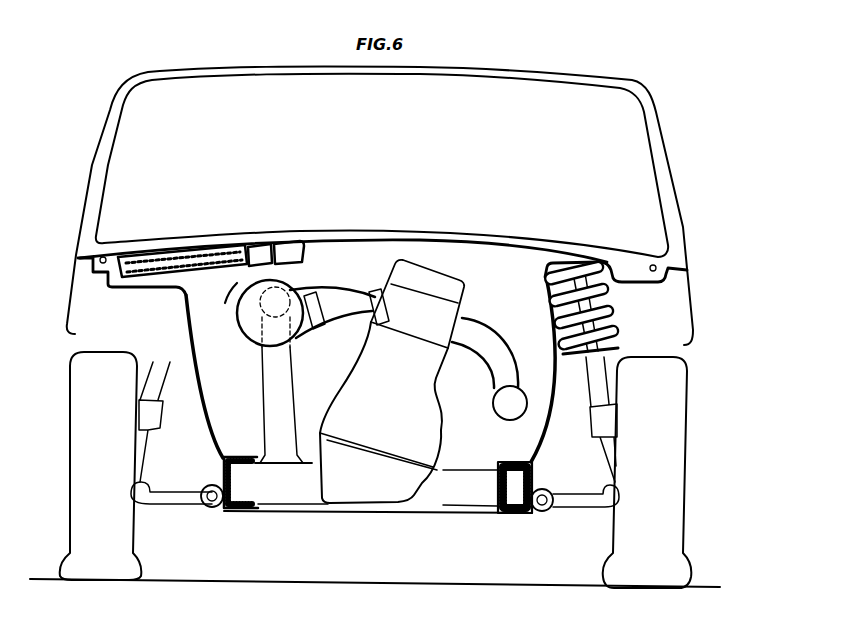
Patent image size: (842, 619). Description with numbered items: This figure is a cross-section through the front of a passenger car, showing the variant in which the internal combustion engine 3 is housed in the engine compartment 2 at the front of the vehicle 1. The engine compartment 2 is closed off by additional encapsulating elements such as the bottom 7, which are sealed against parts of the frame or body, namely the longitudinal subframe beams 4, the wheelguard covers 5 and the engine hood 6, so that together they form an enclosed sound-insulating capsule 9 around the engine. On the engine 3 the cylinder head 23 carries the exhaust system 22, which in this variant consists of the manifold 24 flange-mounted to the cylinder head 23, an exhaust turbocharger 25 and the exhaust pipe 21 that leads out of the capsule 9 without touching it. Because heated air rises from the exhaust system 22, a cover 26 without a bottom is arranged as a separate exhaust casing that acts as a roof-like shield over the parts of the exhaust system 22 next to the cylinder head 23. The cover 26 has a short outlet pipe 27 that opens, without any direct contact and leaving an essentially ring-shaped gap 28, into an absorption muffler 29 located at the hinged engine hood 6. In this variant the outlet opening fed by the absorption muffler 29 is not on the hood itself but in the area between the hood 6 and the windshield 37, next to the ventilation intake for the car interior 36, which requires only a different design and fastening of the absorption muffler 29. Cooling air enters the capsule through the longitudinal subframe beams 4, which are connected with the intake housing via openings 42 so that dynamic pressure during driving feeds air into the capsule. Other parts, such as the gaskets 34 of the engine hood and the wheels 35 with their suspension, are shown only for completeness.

The vehicle body 1 is at (103, 128).
The engine compartment 2 is at (505, 311).
The internal combustion engine 3 is at (394, 405).
The longitudinal subframe beams 4 is at (232, 511).
The wheelguard covers 5 is at (209, 413).
The engine hood 6 is at (497, 240).
The bottom 7 is at (381, 512).
The sound-insulating capsule 9 is at (186, 312).
The exhaust pipe 21 is at (272, 403).
The exhaust system 22 is at (332, 332).
The cylinder head 23 is at (433, 310).
The manifold 24 is at (352, 312).
The exhaust turbocharger 25 is at (241, 326).
The cover 26 is at (231, 303).
The short outlet pipe 27 is at (276, 248).
The ring-shaped gap 28 is at (249, 248).
The absorption muffler 29 is at (197, 248).
The gaskets 34 is at (105, 256).
The wheels 35 is at (90, 385).
The car interior 36 is at (201, 154).
The windshield 37 is at (122, 187).
The openings 42 is at (253, 487).